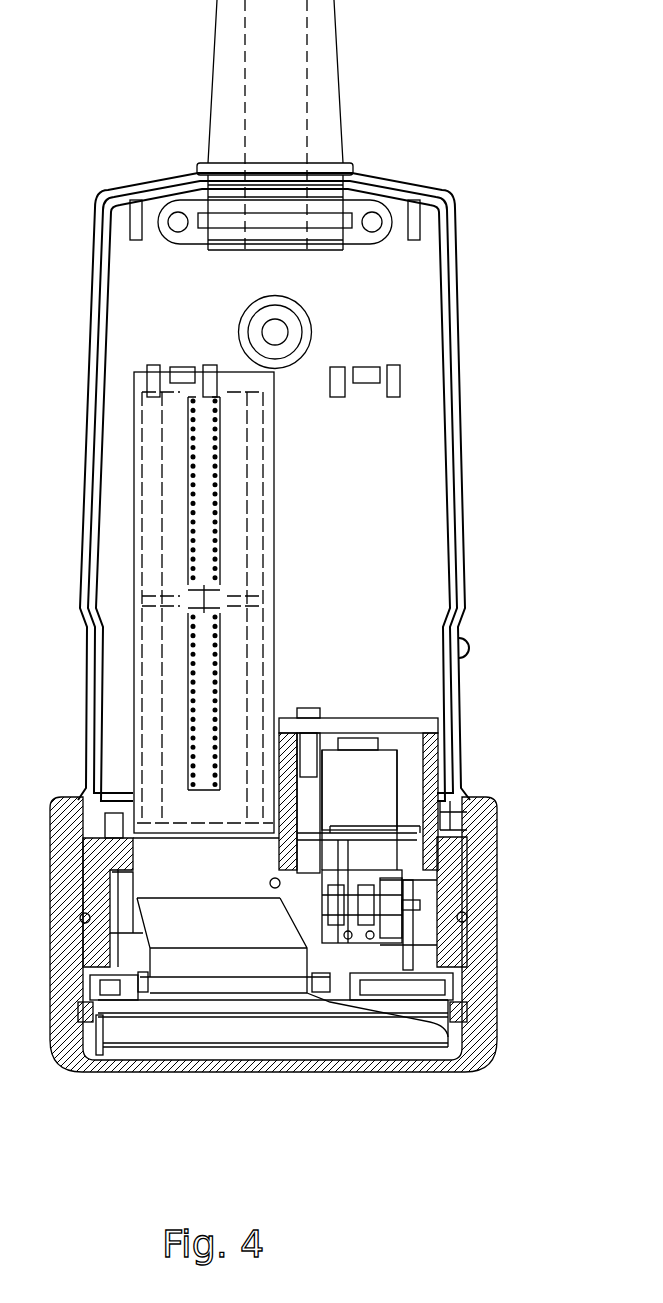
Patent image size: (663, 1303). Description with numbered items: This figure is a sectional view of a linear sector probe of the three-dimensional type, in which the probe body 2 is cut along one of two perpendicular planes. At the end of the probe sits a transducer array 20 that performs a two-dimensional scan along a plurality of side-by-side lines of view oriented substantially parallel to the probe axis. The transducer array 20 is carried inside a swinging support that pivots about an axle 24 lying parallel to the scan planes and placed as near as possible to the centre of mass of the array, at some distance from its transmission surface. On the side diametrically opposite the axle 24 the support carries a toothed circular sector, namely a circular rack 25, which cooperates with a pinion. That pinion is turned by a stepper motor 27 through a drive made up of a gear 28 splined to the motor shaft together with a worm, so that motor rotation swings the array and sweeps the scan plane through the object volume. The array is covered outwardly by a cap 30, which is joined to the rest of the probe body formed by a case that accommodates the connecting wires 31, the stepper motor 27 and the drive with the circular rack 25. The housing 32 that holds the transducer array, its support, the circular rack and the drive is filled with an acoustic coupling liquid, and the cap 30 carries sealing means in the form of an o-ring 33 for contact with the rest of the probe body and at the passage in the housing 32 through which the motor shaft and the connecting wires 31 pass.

The housing 2 is at (463, 403).
The connecting wires 31 is at (455, 467).
The stepper motor 27 is at (378, 780).
The gear 28 is at (440, 877).
The o-ring 33 is at (477, 918).
The circular rack 25 is at (460, 957).
The axle 24 is at (98, 1063).
The transducer array 20 is at (177, 1047).
The cap 30 is at (262, 1062).
The housing 32 is at (410, 1050).